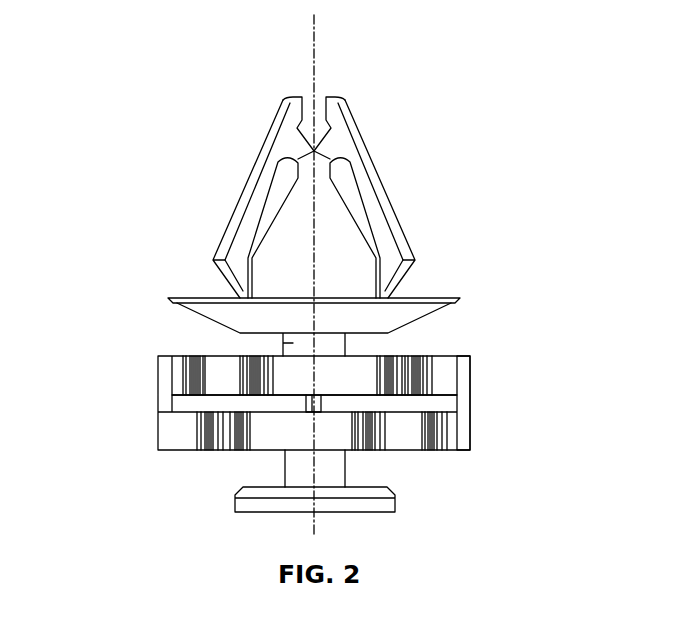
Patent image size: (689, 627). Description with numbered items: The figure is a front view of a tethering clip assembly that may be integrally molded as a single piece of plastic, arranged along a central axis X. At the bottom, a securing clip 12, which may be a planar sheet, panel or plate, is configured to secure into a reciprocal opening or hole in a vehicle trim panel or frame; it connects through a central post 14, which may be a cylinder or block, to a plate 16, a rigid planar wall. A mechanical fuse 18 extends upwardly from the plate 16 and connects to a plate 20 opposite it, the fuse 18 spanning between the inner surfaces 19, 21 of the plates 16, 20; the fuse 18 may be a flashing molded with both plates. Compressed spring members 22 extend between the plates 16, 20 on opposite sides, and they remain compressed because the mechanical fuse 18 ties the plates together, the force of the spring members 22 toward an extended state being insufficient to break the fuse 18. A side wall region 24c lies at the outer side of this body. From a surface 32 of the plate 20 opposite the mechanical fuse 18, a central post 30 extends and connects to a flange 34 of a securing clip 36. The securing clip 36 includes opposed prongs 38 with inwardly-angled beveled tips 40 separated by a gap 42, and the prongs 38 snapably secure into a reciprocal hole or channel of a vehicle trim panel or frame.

The longitudinal axis X is at (317, 33).
The securing clip 12 is at (235, 498).
The central post 14 is at (345, 463).
The plate 16 is at (247, 452).
The mechanical fuse 18 is at (321, 406).
The inner surface 19 is at (377, 412).
The plate 20 is at (277, 356).
The inner surface 21 is at (270, 397).
The compressed spring members 22 is at (158, 385).
The side wall 24c is at (470, 385).
The central post 30 is at (292, 378).
The surface 32 is at (365, 395).
The flange 34 is at (428, 298).
The securing clip 36 is at (335, 170).
The opposed prongs 38 is at (250, 172).
The inwardly-angled beveled tips 40 is at (290, 97).
The gap 42 is at (299, 133).